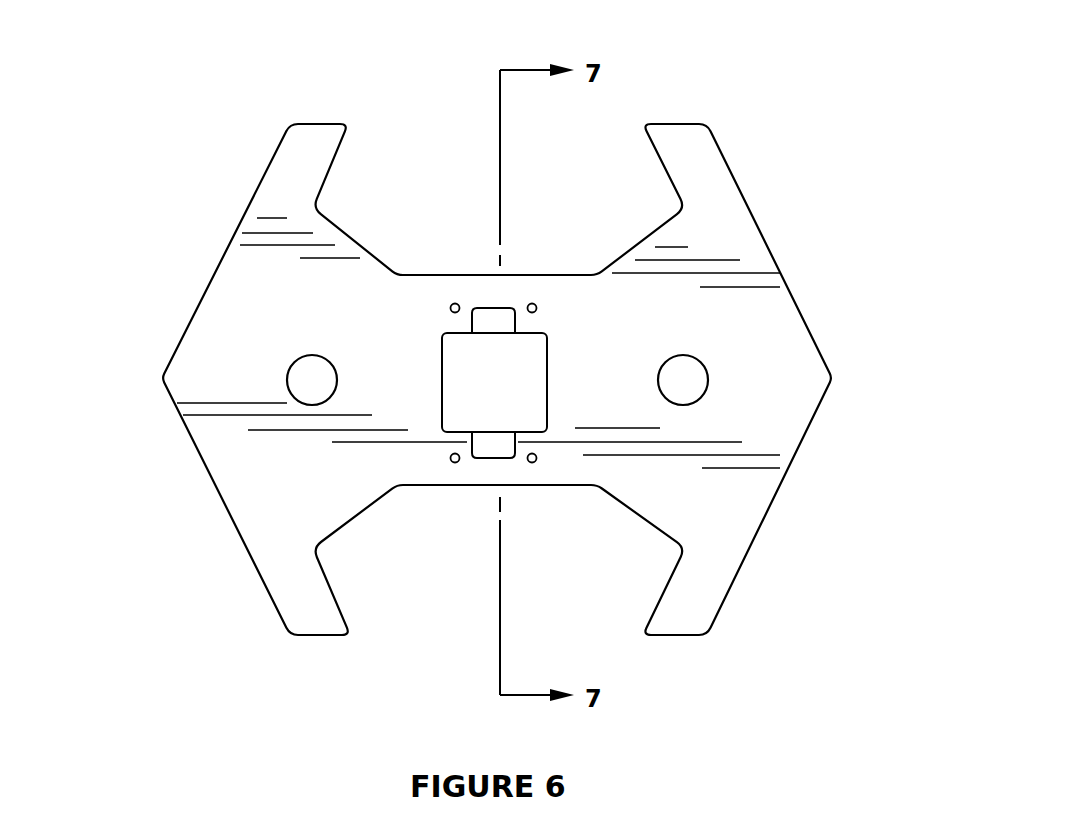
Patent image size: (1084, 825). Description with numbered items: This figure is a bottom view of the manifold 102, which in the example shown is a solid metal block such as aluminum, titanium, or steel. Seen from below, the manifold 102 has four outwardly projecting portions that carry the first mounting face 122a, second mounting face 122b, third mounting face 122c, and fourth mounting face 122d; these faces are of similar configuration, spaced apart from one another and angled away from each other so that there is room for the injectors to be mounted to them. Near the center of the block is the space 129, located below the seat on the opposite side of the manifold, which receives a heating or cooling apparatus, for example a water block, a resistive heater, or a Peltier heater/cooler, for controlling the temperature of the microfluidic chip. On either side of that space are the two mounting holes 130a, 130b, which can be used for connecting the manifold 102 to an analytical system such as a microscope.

The manifold 102 is at (822, 196).
The first mounting face 122a is at (795, 295).
The second mounting face 122b is at (803, 440).
The third mounting face 122c is at (187, 440).
The fourth mounting face 122d is at (202, 298).
The mounting hole 130a is at (295, 365).
The mounting hole 130b is at (706, 393).
The space 129 is at (515, 392).